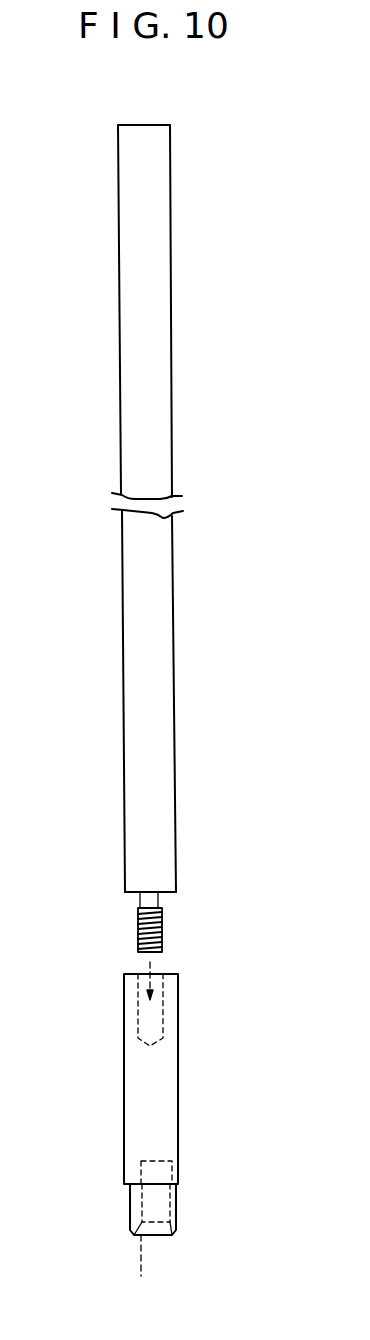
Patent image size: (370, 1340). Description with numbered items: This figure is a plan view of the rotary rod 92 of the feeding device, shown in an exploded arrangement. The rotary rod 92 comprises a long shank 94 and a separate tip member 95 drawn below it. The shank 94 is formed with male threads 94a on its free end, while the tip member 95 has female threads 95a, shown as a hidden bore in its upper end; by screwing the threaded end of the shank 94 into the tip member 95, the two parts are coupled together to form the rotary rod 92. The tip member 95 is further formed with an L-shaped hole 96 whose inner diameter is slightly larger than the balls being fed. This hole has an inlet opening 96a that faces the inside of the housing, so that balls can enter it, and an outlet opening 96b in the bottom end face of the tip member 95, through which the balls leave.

The rotary rod 92 is at (185, 336).
The shank 94 is at (120, 590).
The male threads 94a is at (162, 922).
The tip member 95 is at (143, 1091).
The female threads 95a is at (165, 1008).
The L-shaped hole 96 is at (165, 1207).
The inlet opening 96a is at (178, 1160).
The outlet opening 96b is at (142, 1276).